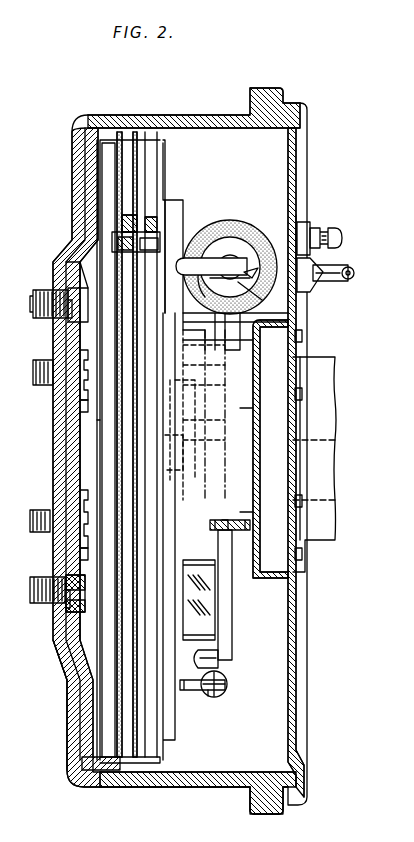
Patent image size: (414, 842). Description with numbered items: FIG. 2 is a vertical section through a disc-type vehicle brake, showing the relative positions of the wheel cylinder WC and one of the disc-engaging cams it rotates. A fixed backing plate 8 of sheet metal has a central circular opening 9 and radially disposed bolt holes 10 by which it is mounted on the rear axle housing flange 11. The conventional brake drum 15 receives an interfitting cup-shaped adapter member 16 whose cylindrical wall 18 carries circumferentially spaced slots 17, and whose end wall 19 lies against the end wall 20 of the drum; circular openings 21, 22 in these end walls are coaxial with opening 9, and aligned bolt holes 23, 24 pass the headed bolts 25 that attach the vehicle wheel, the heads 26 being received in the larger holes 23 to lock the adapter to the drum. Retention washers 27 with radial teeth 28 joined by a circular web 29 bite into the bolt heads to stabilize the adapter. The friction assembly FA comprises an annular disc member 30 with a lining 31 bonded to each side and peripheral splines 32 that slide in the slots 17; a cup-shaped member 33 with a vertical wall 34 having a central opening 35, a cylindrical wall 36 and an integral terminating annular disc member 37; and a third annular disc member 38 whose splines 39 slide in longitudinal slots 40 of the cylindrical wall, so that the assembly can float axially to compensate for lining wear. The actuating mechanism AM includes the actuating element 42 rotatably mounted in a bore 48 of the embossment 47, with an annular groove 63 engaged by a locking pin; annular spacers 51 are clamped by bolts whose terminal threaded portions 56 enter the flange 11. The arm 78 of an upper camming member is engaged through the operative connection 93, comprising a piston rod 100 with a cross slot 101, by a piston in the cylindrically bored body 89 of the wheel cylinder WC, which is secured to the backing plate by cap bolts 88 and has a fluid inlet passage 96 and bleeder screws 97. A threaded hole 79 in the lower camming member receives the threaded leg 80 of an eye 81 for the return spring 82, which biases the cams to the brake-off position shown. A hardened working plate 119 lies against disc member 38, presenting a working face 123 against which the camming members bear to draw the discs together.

The backing plate 8 is at (291, 660).
The central circular opening 9 is at (305, 520).
The bolt holes 10 is at (304, 475).
The rear axle housing flange 11 is at (303, 360).
The wheel brake drum 15 is at (72, 718).
The cup-shaped adapter member 16 is at (80, 740).
The slots 17 is at (150, 160).
The cylindrical wall 18 is at (98, 778).
The end wall of adapter member 19 is at (68, 680).
The end wall of brake drum 20 is at (68, 645).
The circular opening in adapter end wall 21 is at (82, 560).
The circular opening in drum end wall 22 is at (66, 578).
The bolt holes in adapter member 23 is at (68, 608).
The bolt holes in drum end wall 24 is at (80, 290).
The headed bolts 25 is at (45, 305).
The bolt heads 26 is at (72, 284).
The retention washers 27 is at (78, 492).
The radial teeth 28 is at (82, 375).
The circular web 29 is at (82, 402).
The annular disc member 30 is at (128, 187).
The composition linings 31 is at (100, 138).
The splines 32 is at (125, 132).
The cylindrical cup-shaped member 33 is at (241, 648).
The vertical wall 34 is at (233, 627).
The central circular opening 35 is at (188, 470).
The cylindrical wall 36 is at (232, 656).
The terminating annular disc member 37 is at (98, 452).
The third annular disc member 38 is at (250, 115).
The splines 39 is at (118, 240).
The longitudinal slots 40 is at (142, 245).
The actuating element 42 is at (222, 235).
The embossment 47 is at (205, 478).
The bore 48 is at (198, 380).
The annular spacer 51 is at (243, 400).
The terminal threaded portion 56 is at (348, 489).
The annular groove 63 is at (195, 447).
The laterally extending arm 78 is at (240, 262).
The threaded hole 79 is at (180, 670).
The threaded leg 80 is at (188, 690).
The eye 81 is at (224, 686).
The return spring 82 is at (225, 700).
The cap bolts 88 is at (305, 240).
The cylindrically bored body 89 is at (300, 228).
The operative connection 93 is at (262, 300).
The fluid inlet passage 96 is at (350, 268).
The bleeder screws 97 is at (322, 232).
The piston rod 100 is at (221, 236).
The cross slot 101 is at (258, 270).
The hardened annular working plate 119 is at (172, 744).
The working face 123 is at (172, 185).
The actuating mechanism AM is at (191, 203).
The hydraulic wheel cylinder WC is at (243, 216).
The friction assembly FA is at (178, 729).